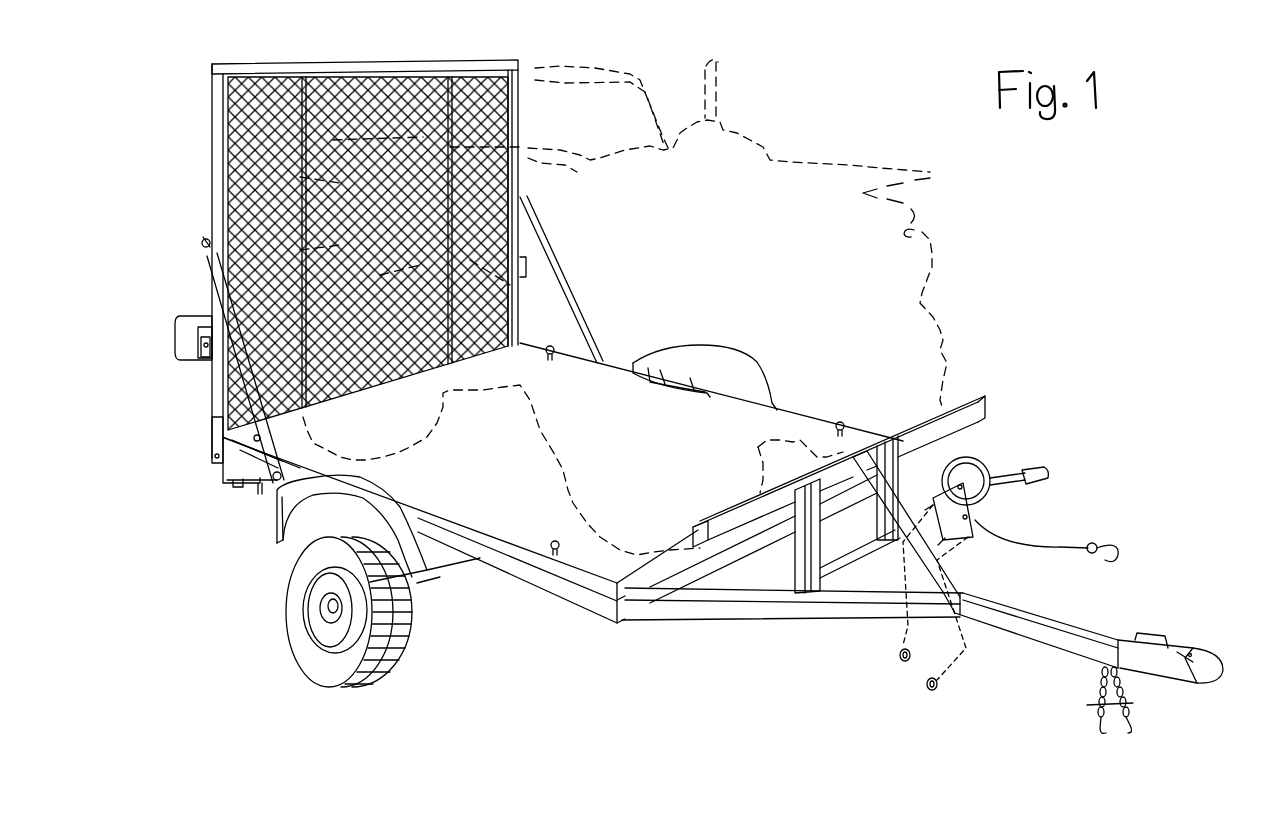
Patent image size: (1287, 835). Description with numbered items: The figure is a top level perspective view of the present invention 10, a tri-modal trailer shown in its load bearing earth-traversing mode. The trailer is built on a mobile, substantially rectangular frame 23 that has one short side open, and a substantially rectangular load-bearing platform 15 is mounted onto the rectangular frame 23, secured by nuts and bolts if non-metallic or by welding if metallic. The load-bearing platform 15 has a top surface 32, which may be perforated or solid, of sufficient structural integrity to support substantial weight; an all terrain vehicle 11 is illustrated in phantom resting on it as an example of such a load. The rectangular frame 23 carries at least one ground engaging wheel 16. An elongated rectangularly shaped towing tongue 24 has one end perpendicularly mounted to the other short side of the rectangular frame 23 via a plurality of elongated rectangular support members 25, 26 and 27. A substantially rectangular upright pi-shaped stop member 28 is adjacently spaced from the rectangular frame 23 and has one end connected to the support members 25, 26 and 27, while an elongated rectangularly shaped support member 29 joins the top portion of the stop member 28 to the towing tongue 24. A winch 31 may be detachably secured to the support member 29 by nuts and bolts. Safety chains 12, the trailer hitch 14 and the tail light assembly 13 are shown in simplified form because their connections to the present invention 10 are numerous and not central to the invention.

The present invention 10 is at (628, 702).
The all terrain vehicle (ATV) 11 is at (911, 209).
The safety chains 12 is at (1093, 688).
The tail light assembly 13 is at (180, 318).
The trailer hitch 14 is at (1190, 685).
The load-bearing platform 15 is at (510, 548).
The ground engaging wheel 16 is at (400, 675).
The rectangular frame 23 is at (593, 607).
The towing tongue 24 is at (1050, 620).
The support member 25 is at (843, 605).
The support member 26 is at (773, 553).
The support member 27 is at (862, 516).
The upright pi-shaped stop member 28 is at (975, 405).
The support member 29 is at (953, 573).
The winch 31 is at (985, 465).
The top surface 32 is at (501, 481).